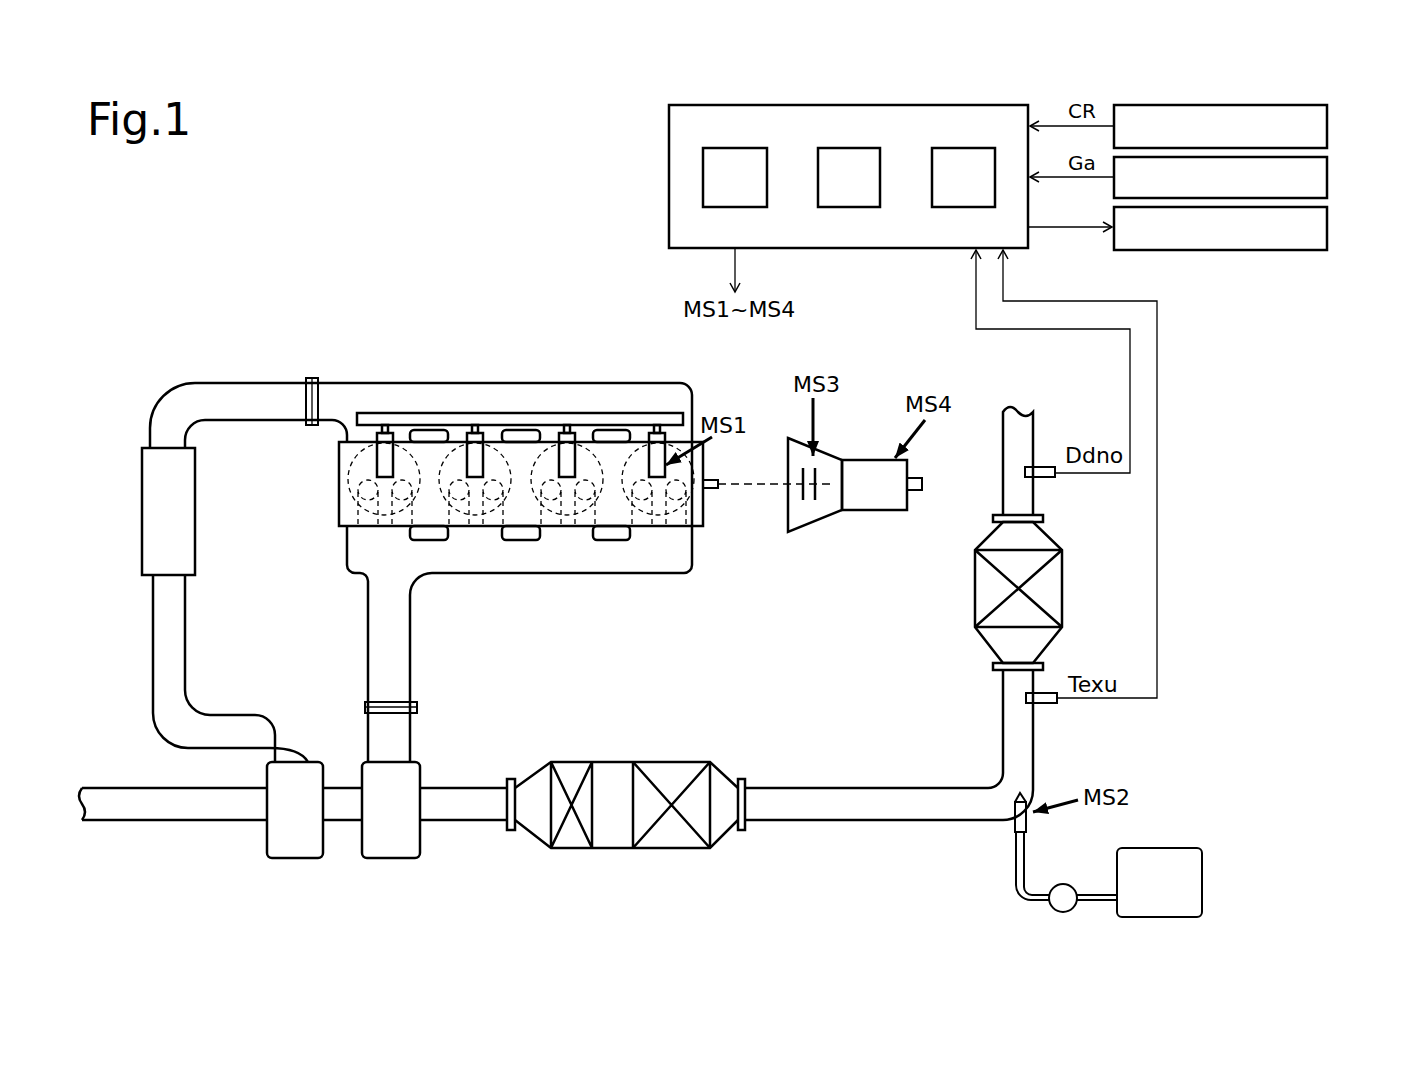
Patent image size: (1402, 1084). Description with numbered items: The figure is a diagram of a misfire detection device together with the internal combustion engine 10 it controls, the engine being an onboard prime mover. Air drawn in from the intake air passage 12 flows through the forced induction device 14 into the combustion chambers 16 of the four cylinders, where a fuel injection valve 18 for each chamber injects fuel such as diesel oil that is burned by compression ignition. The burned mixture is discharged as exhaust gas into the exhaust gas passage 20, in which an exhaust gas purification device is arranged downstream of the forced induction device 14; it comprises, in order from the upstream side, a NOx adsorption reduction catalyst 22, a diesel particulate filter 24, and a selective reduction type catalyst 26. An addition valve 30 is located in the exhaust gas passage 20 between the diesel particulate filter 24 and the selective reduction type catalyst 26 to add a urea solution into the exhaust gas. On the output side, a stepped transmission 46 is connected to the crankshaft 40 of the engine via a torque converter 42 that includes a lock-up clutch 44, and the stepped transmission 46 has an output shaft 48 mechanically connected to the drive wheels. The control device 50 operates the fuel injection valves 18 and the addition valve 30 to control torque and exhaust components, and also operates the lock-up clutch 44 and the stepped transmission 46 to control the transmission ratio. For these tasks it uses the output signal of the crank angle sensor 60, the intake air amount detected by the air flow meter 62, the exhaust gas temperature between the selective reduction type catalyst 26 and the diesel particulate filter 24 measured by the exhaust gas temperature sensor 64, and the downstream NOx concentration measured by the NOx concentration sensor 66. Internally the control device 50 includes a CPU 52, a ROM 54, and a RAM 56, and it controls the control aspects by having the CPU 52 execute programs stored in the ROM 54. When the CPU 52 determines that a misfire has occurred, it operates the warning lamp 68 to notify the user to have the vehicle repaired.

The internal combustion engine 10 is at (350, 302).
The intake air passage 12 is at (157, 814).
The forced induction device 14 is at (343, 852).
The combustion chamber 16 is at (339, 483).
The fuel injection valve 18 is at (380, 456).
The exhaust gas passage 20 is at (694, 573).
The NOx adsorption reduction catalyst (NSR) 22 is at (570, 766).
The diesel particulate filter (DPF) 24 is at (672, 766).
The selective reduction type catalyst (SCR) 26 is at (1062, 573).
The addition valve 30 is at (1013, 826).
The crankshaft 40 is at (718, 488).
The torque converter 42 is at (828, 455).
The lock-up clutch 44 is at (818, 496).
The stepped transmission 46 is at (870, 460).
The output shaft 48 is at (916, 478).
The control device 50 is at (970, 105).
The CPU 52 is at (735, 148).
The ROM 54 is at (850, 148).
The RAM 56 is at (962, 148).
The crank angle sensor 60 is at (1328, 126).
The air flow meter 62 is at (1328, 177).
The exhaust gas temperature sensor 64 is at (1045, 703).
The NOx concentration sensor 66 is at (1045, 477).
The warning lamp 68 is at (1328, 227).